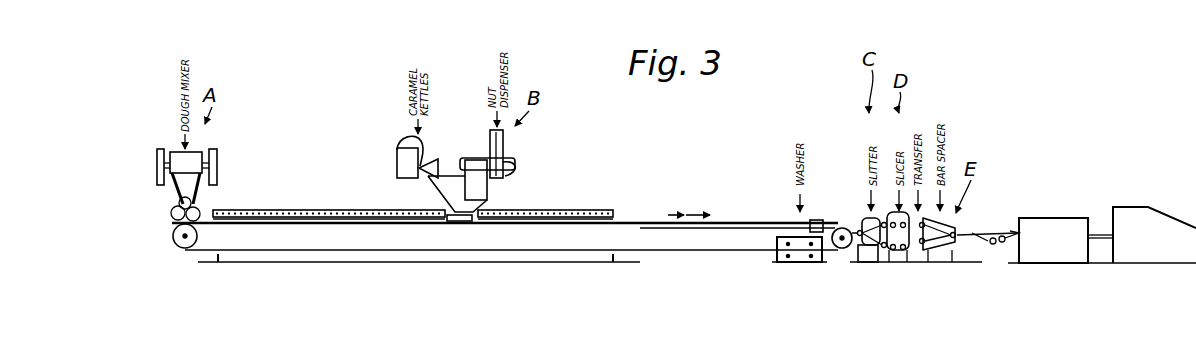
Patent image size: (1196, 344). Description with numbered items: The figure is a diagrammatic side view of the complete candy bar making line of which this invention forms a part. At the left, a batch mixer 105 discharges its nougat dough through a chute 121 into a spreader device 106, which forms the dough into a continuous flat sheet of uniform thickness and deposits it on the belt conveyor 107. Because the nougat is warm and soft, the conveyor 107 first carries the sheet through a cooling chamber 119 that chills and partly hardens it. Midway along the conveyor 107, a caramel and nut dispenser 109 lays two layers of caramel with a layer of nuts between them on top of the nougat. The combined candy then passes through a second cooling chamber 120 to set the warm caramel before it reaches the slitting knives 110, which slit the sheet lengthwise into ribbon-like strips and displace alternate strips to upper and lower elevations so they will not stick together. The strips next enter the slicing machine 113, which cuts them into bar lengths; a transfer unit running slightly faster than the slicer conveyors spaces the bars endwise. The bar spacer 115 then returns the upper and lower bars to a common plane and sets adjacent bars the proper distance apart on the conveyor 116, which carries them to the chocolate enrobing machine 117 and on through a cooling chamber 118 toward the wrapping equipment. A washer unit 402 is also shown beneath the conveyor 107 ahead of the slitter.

The batch mixer 105 is at (220, 166).
The spreader device 106 is at (207, 212).
The chute 121 is at (174, 196).
The cooling chamber 119 is at (312, 210).
The cooling chamber 120 is at (584, 210).
The caramel and nut dispenser 109 is at (492, 190).
The conveyor 107 is at (697, 252).
The washer unit 402 is at (820, 263).
The slitting knives 110 is at (868, 263).
The slicing machine 113 is at (900, 263).
The bar spacer 115 is at (940, 263).
The conveyor 116 is at (988, 232).
The chocolate enrobing machine 117 is at (1050, 217).
The cooling chamber 118 is at (1147, 214).